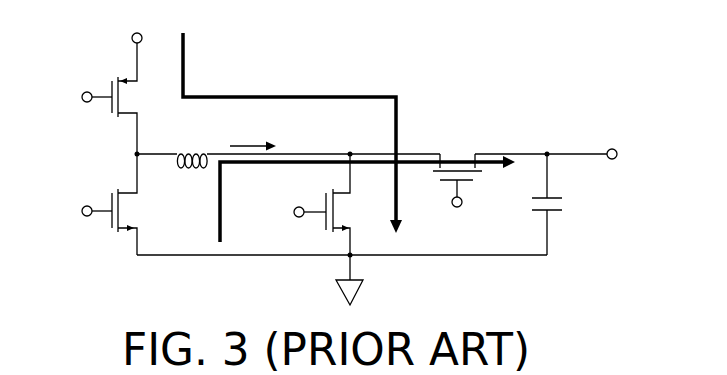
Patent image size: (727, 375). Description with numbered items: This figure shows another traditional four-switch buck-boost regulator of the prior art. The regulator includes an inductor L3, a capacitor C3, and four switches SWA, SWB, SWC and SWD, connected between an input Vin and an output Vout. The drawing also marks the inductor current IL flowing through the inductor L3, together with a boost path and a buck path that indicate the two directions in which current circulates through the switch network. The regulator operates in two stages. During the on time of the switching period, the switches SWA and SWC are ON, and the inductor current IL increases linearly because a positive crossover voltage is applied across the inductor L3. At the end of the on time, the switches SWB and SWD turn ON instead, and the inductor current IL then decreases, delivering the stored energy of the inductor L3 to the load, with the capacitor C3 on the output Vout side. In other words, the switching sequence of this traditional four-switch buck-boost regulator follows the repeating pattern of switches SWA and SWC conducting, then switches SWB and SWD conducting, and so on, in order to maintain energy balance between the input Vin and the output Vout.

The input voltage terminal Vin is at (132, 42).
The output voltage terminal Vout is at (603, 155).
The switch SWA is at (138, 115).
The switch SWB is at (138, 204).
The switch SWC is at (352, 229).
The switch SWD is at (490, 160).
The inductor L3 is at (192, 146).
The capacitor C3 is at (535, 204).
The inductor current IL is at (253, 132).
The boost current path boost is at (287, 117).
The buck current path buck is at (350, 199).